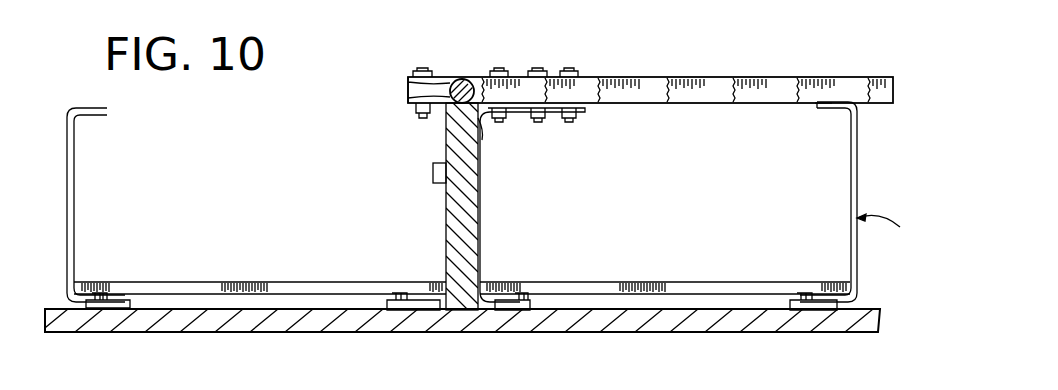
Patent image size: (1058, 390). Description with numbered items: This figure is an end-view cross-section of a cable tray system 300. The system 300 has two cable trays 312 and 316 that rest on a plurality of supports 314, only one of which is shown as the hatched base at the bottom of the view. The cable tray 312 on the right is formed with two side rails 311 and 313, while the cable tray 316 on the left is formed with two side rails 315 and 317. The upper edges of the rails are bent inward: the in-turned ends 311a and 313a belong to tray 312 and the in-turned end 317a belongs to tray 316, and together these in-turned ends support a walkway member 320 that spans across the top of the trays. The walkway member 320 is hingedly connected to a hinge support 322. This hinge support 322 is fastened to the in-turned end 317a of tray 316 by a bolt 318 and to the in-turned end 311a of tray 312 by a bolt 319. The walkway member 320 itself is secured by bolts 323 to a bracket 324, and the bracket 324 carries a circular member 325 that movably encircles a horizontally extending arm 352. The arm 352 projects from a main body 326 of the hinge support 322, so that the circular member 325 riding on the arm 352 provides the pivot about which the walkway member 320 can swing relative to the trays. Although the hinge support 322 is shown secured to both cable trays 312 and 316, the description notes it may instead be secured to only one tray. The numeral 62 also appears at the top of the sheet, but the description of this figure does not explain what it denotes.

The arm 62 is at (641, 8).
The cable tray system 300 is at (888, 233).
The side rail 311 is at (535, 209).
The in-turned end 311a is at (507, 113).
The cable tray 312 is at (839, 202).
The side rail 313 is at (850, 238).
The in-turned end 313a is at (830, 108).
The support 314 is at (670, 317).
The side rail 315 is at (75, 240).
The cable tray 316 is at (67, 213).
The side rail 317 is at (412, 200).
The in-turned end 317a is at (445, 113).
The bolt 318 is at (425, 70).
The bolt 319 is at (503, 70).
The walkway member 320 is at (778, 78).
The hinge support 322 is at (440, 77).
The bolts 323 is at (513, 120).
The bracket 324 is at (555, 70).
The circular member 325 is at (480, 143).
The main body 326 is at (412, 105).
The horizontally extending arm 352 is at (450, 90).